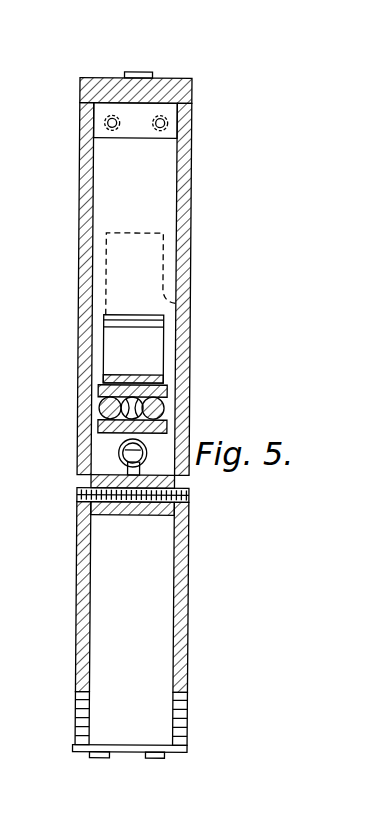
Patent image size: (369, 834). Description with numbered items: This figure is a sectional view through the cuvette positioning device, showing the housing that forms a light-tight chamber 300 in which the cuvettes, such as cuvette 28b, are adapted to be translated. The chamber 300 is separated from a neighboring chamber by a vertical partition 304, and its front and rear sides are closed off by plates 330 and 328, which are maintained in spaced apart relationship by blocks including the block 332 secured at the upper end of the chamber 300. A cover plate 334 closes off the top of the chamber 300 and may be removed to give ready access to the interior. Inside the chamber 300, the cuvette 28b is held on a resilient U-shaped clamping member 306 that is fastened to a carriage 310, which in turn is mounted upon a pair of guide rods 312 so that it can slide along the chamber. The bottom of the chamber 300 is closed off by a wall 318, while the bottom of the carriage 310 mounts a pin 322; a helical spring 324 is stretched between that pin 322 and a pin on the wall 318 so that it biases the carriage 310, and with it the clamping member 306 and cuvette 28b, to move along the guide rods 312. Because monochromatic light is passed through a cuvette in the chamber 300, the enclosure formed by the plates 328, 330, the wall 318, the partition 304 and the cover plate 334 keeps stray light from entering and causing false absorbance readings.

The cover plate 334 is at (108, 104).
The block 332 is at (188, 120).
The plate 330 is at (88, 312).
The plate 328 is at (187, 280).
The cuvette 28b is at (177, 303).
The resilient U-shaped clamping member 306 is at (153, 352).
The carriage 310 is at (167, 393).
The guide rods 312 is at (98, 406).
The pin 322 is at (133, 462).
The helical spring 324 is at (145, 458).
The wall 318 is at (155, 515).
The chamber 300 is at (188, 612).
The vertical partition 304 is at (150, 671).